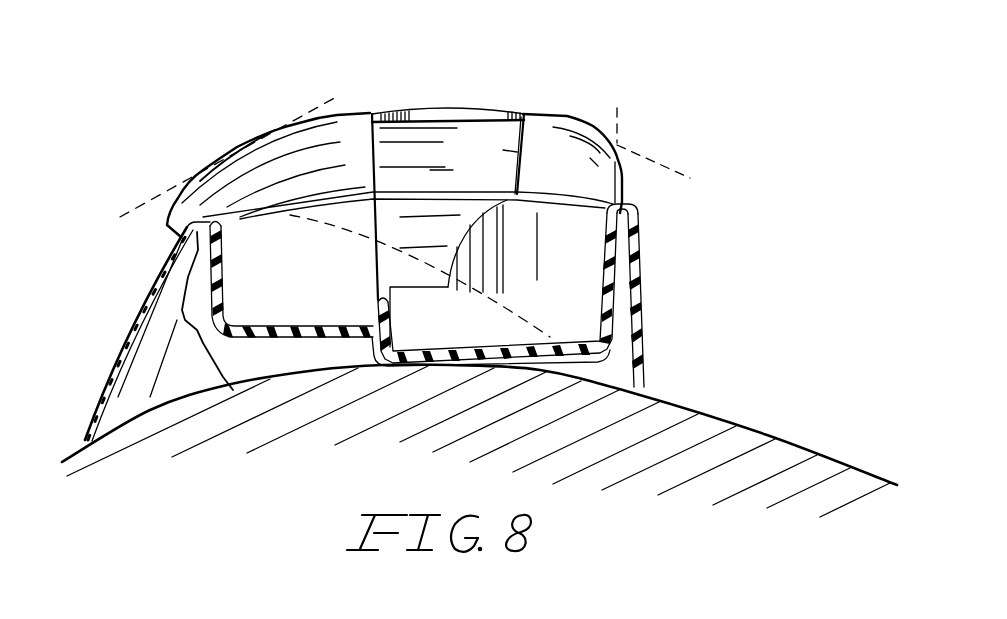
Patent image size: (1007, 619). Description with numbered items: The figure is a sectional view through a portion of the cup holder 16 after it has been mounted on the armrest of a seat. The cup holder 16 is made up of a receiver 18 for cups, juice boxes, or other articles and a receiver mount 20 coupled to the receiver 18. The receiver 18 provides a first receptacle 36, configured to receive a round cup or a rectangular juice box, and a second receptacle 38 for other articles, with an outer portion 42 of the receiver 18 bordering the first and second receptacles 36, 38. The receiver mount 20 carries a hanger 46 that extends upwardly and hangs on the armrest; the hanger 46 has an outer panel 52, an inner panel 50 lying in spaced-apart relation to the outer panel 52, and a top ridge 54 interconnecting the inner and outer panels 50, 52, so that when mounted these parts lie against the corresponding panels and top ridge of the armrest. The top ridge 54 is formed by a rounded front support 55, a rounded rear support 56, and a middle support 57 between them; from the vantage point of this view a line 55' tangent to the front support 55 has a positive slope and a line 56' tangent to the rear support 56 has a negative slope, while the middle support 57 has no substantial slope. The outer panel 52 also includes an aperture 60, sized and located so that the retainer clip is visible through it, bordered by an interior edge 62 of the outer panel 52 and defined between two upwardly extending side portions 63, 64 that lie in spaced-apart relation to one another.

The cup holder 16 is at (130, 263).
The receiver 18 is at (655, 317).
The receiver mount 20 is at (359, 104).
The first receptacle 36 is at (548, 272).
The second receptacle 38 is at (274, 248).
The outer portion 42 is at (136, 353).
The hanger 46 is at (434, 98).
The inner panel 50 is at (451, 141).
The outer panel 52 is at (630, 210).
The top ridge 54 is at (480, 96).
The rounded front support 55 is at (254, 158).
The line tangent to front support 55' is at (214, 156).
The rounded rear support 56 is at (633, 124).
The line tangent to rear support 56' is at (565, 103).
The middle support 57 is at (410, 112).
The aperture 60 is at (424, 171).
The interior edge 62 is at (507, 167).
The upwardly extending side portion 63 is at (306, 137).
The upwardly extending side portion 64 is at (556, 128).